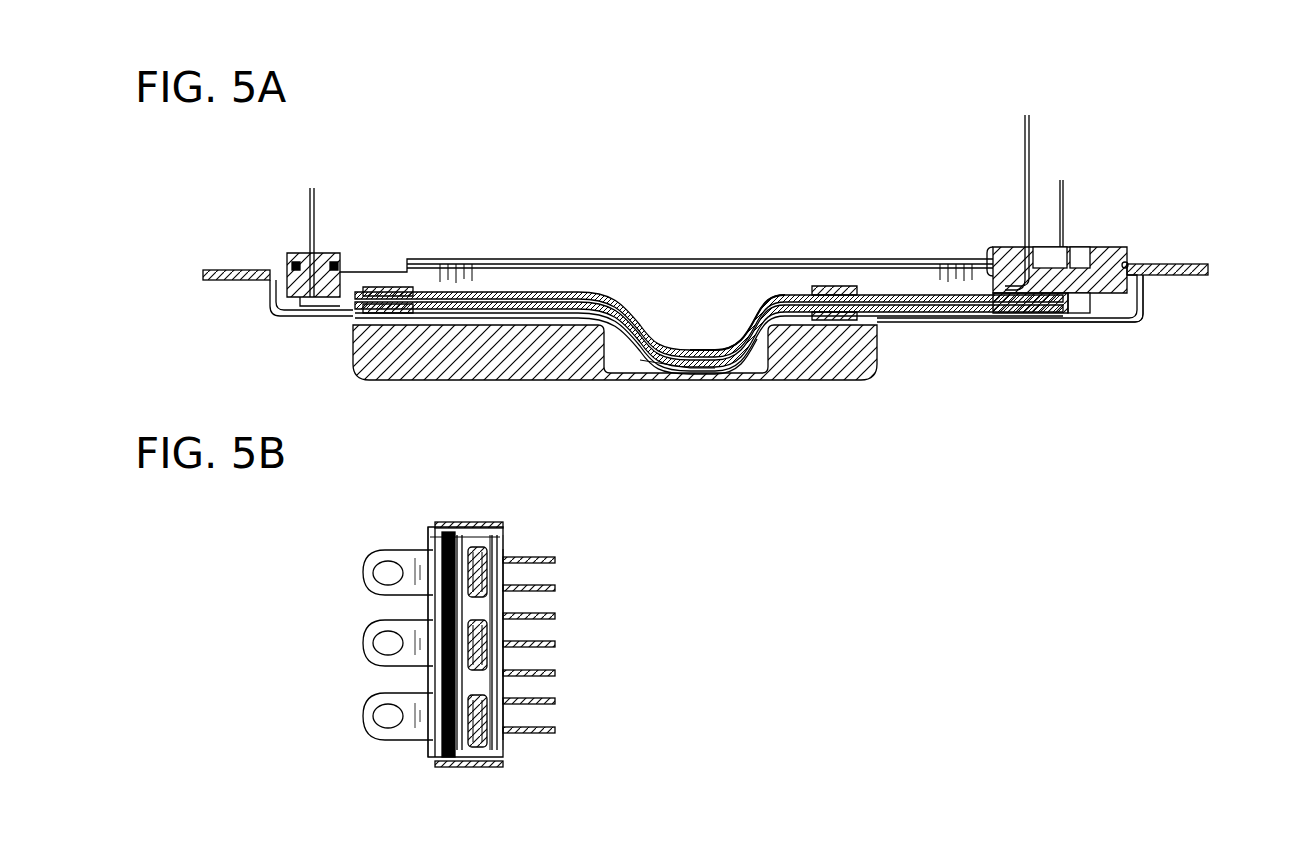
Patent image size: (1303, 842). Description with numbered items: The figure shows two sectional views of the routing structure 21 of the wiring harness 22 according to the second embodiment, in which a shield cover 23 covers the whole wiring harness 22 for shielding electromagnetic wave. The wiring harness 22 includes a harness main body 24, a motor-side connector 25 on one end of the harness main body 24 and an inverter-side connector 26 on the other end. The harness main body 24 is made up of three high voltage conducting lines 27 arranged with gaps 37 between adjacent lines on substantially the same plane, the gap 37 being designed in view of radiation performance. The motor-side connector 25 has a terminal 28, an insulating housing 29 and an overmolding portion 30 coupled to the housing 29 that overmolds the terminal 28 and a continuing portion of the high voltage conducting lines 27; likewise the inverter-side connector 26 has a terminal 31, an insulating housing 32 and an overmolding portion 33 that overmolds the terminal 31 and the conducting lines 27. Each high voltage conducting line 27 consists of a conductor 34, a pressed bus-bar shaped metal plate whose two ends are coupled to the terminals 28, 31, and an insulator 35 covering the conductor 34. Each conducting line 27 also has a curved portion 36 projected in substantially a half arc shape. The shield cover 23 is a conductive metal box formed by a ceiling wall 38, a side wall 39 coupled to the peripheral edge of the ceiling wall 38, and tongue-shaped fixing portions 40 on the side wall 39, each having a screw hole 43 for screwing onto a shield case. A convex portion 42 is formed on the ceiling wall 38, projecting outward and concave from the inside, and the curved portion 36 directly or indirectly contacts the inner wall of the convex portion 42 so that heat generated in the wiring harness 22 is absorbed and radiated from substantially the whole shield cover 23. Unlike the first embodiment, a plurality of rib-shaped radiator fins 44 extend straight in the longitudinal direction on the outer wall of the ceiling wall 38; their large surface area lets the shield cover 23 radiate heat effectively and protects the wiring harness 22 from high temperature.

In FIG. 5A, the routing structure 21 is at (1060, 365).
In FIG. 5B, the routing structure 21 is at (577, 597).
In FIG. 5A, the wiring harness 22 is at (1088, 302).
In FIG. 5B, the wiring harness 22 is at (410, 748).
In FIG. 5A, the shield cover 23 is at (1030, 357).
In FIG. 5B, the shield cover 23 is at (548, 702).
In FIG. 5A, the harness main body 24 is at (757, 297).
In FIG. 5A, the motor-side connector 25 is at (335, 250).
In FIG. 5B, the motor-side connector 25 is at (370, 664).
In FIG. 5A, the inverter-side connector 26 is at (1105, 247).
In FIG. 5A, the high voltage conducting line 27 is at (709, 236).
In FIG. 5B, the high voltage conducting line 27 is at (589, 635).
In FIG. 5A, the terminal 28 is at (312, 190).
In FIG. 5B, the terminal 28 is at (373, 570).
In FIG. 5A, the housing 29 is at (300, 316).
In FIG. 5B, the housing 29 is at (432, 530).
In FIG. 5A, the overmolding portion 30 is at (378, 287).
In FIG. 5A, the terminal 31 is at (1066, 195).
In FIG. 5A, the housing 32 is at (1130, 322).
In FIG. 5A, the overmolding portion 33 is at (912, 321).
In FIG. 5A, the conductor 34 is at (572, 292).
In FIG. 5B, the conductor 34 is at (478, 550).
In FIG. 5A, the insulator 35 is at (522, 302).
In FIG. 5B, the insulator 35 is at (492, 555).
In FIG. 5A, the curved portion 36 is at (745, 372).
In FIG. 5B, the gap 37 is at (468, 602).
In FIG. 5A, the ceiling wall 38 is at (540, 325).
In FIG. 5B, the ceiling wall 38 is at (505, 762).
In FIG. 5A, the side wall 39 is at (848, 260).
In FIG. 5B, the side wall 39 is at (470, 522).
In FIG. 5A, the fixing portion 40 is at (220, 270).
In FIG. 5A, the convex portion 42 is at (702, 372).
In FIG. 5A, the screw hole 43 is at (240, 281).
In FIG. 5A, the radiator fin 44 is at (470, 350).
In FIG. 5B, the radiator fin 44 is at (545, 633).